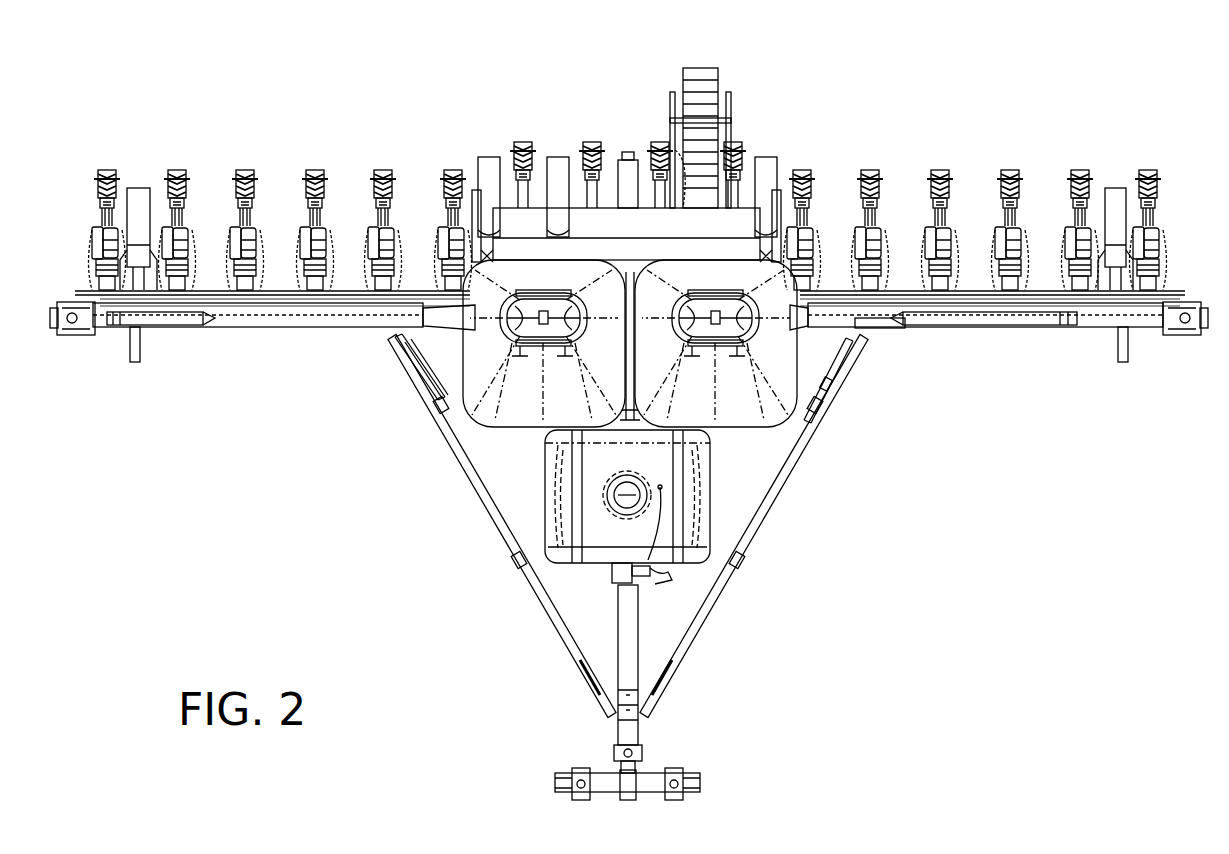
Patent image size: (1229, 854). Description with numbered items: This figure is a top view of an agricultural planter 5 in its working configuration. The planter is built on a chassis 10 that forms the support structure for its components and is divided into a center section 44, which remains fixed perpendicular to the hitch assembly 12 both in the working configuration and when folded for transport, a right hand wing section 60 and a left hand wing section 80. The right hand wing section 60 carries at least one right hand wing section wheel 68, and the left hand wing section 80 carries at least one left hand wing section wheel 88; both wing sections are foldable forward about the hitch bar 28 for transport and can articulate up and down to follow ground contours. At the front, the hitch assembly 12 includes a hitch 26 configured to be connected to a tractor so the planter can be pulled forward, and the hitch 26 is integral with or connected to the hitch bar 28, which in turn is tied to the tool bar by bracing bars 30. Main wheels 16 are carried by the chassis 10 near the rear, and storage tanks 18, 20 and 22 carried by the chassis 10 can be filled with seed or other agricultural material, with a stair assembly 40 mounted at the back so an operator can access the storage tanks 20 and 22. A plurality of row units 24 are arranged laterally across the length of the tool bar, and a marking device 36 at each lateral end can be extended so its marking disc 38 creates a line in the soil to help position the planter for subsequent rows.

The agricultural planter 5 is at (893, 70).
The chassis 10 is at (828, 375).
The hitch assembly 12 is at (640, 660).
The main wheels 16 is at (558, 157).
The storage tank 18 is at (618, 547).
The storage tank 20 is at (534, 415).
The storage tank 22 is at (707, 415).
The row units 24 is at (255, 182).
The hitch 26 is at (650, 790).
The hitch bar 28 is at (640, 610).
The bracing bars 30 is at (490, 510).
The marking device 36 is at (235, 320).
The marking disc 38 is at (95, 335).
The stair assembly 40 is at (730, 105).
The center section 44 is at (440, 388).
The right hand wing section 60 is at (195, 330).
The right hand wing section wheel 68 is at (138, 188).
The left hand wing section 80 is at (985, 340).
The left hand wing section wheel 88 is at (1120, 188).